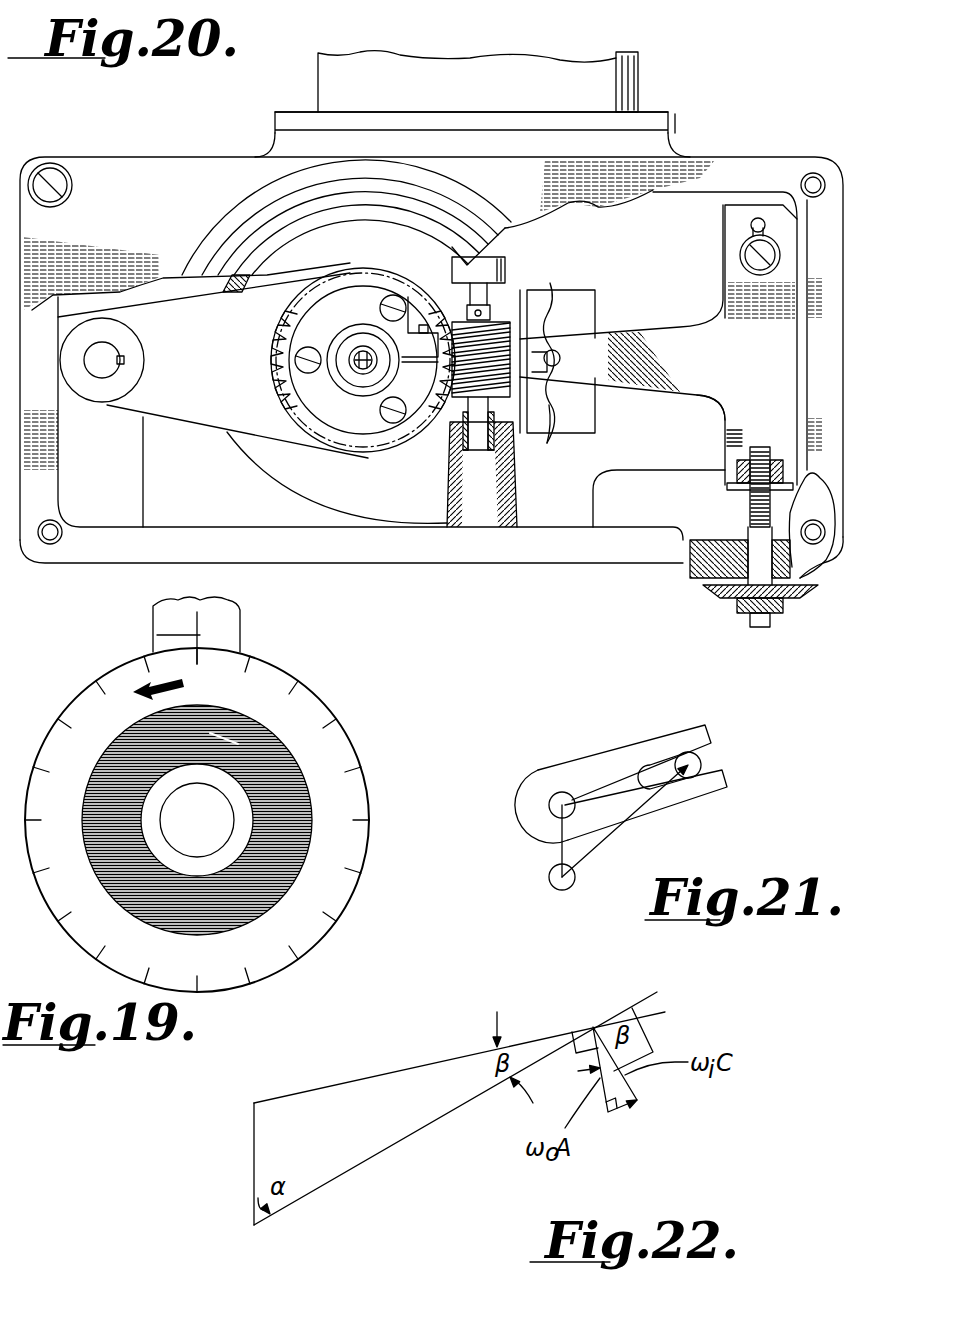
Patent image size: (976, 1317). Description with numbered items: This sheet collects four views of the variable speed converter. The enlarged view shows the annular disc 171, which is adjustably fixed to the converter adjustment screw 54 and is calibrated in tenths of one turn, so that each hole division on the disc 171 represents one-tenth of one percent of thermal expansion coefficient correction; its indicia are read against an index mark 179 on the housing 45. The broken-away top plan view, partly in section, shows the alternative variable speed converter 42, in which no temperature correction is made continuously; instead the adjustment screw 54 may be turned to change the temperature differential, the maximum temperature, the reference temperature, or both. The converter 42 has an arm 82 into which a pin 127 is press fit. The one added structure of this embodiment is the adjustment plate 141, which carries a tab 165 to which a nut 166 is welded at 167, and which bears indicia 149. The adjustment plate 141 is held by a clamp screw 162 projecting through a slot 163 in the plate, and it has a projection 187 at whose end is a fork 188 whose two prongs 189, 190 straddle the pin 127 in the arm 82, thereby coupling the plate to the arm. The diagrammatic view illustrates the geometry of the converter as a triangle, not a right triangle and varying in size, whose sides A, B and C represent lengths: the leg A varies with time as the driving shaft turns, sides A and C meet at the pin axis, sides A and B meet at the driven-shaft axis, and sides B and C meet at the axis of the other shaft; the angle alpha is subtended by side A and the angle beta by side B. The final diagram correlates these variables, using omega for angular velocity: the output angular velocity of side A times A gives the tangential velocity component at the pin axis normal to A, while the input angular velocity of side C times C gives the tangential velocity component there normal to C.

In FIG. 20, the variable speed converter 42 is at (710, 99).
In FIG. 20, the slot 163 is at (759, 220).
In FIG. 20, the clamp screw 162 is at (741, 259).
In FIG. 20, the adjustment plate 141 is at (677, 326).
In FIG. 20, the prong 189 is at (553, 350).
In FIG. 20, the fork 188 is at (577, 325).
In FIG. 20, the pin 127 is at (560, 365).
In FIG. 20, the projection 187 is at (683, 397).
In FIG. 20, the prong 190 is at (546, 439).
In FIG. 20, the indicia 149 is at (746, 425).
In FIG. 20, the nut 166 is at (740, 470).
In FIG. 20, the tab 165 is at (740, 490).
In FIG. 20, the weld 167 is at (839, 525).
In FIG. 20, the adjustment screw 54 is at (748, 622).
In FIG. 20, the arm 82 is at (170, 418).
In FIG. 19, the disc 171 is at (330, 688).
In FIG. 19, the housing 45 is at (220, 620).
In FIG. 19, the index mark 179 is at (197, 635).
In FIG. 21, the triangle side A is at (598, 792).
In FIG. 22, the triangle side A is at (388, 1073).
In FIG. 21, the triangle side B is at (561, 852).
In FIG. 22, the triangle side B is at (254, 1167).
In FIG. 21, the triangle side C is at (603, 840).
In FIG. 22, the triangle side C is at (375, 1157).